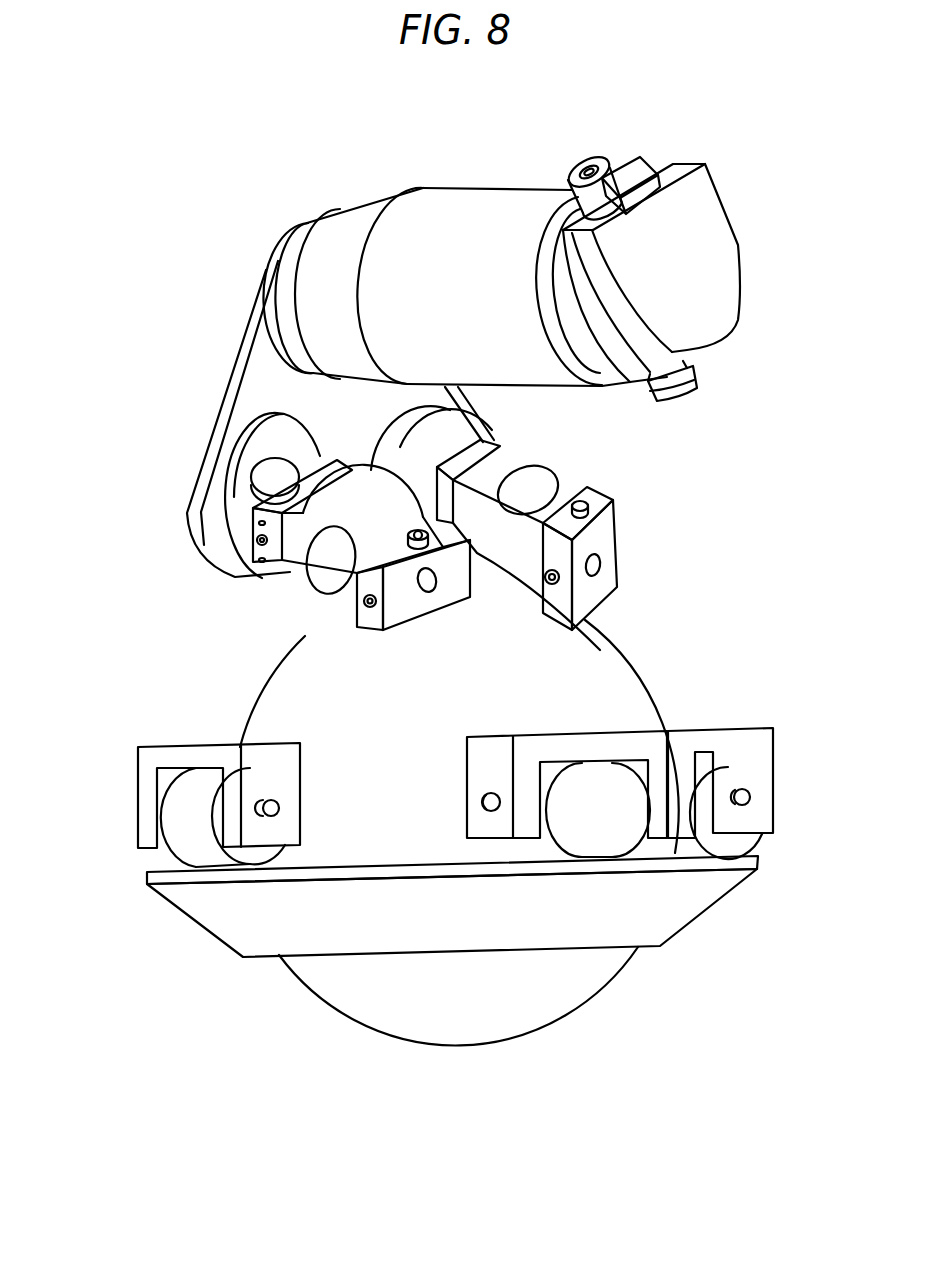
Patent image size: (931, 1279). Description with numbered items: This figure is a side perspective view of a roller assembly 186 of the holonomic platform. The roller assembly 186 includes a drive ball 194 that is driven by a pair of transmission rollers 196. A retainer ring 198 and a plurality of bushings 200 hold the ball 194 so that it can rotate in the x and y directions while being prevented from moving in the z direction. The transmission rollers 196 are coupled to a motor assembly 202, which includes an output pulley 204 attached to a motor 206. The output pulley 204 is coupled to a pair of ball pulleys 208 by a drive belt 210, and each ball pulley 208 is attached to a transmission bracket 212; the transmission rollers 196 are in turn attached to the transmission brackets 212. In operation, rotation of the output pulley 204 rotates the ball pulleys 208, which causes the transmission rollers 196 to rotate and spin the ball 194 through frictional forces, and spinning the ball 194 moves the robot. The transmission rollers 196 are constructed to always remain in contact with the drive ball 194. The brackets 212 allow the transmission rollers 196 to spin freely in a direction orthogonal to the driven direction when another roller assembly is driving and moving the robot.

The roller assembly 186 is at (718, 528).
The drive ball 194 is at (527, 997).
The transmission rollers 196 is at (320, 572).
The retainer ring 198 is at (228, 912).
The bushings 200 is at (160, 753).
The motor assembly 202 is at (489, 254).
The output pulley 204 is at (272, 274).
The motor 206 is at (343, 237).
The ball pulleys 208 is at (220, 497).
The drive belt 210 is at (226, 398).
The transmission brackets 212 is at (318, 487).